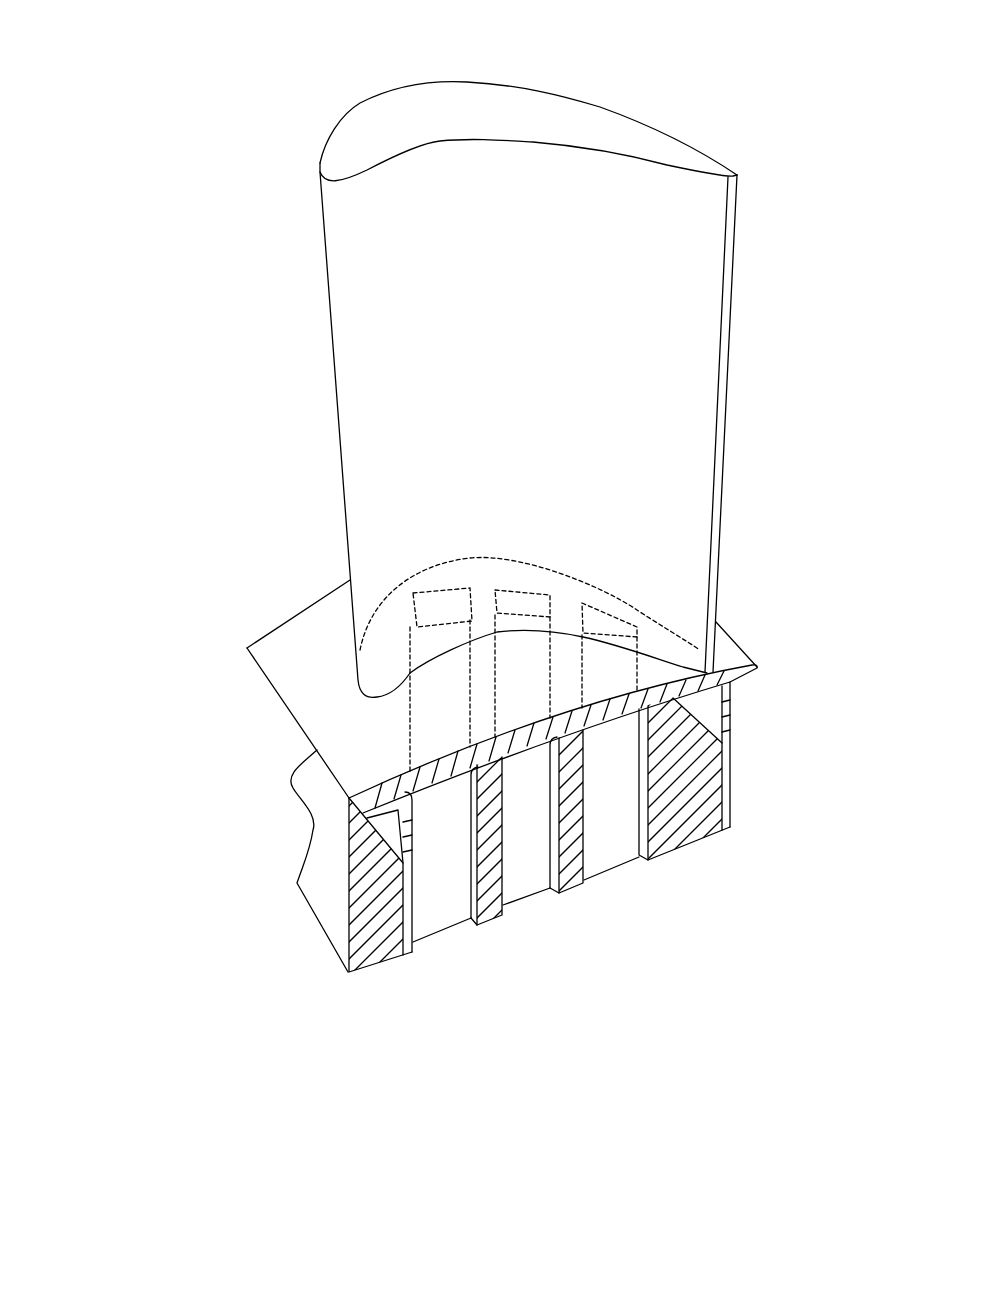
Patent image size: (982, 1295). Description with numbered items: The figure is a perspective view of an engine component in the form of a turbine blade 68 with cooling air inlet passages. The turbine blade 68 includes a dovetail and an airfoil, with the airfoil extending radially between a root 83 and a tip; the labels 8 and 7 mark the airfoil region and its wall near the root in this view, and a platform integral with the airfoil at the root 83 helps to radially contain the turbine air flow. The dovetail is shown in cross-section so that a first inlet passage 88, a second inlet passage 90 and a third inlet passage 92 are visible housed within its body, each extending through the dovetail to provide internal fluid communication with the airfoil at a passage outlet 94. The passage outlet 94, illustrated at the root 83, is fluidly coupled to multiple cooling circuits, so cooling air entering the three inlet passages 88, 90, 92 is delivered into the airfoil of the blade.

The turbine blade 68 is at (176, 182).
The airfoil 8 is at (413, 122).
The airfoil wall / sidewall 7 is at (336, 463).
The root 83 is at (665, 652).
The passage outlet 94 is at (430, 587).
The first inlet passage 88 is at (449, 950).
The second inlet passage 90 is at (533, 930).
The third inlet passage 92 is at (610, 895).